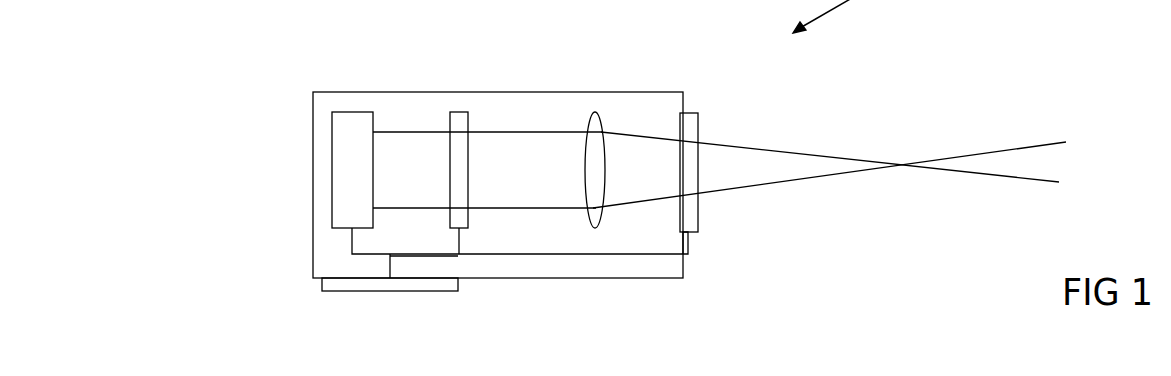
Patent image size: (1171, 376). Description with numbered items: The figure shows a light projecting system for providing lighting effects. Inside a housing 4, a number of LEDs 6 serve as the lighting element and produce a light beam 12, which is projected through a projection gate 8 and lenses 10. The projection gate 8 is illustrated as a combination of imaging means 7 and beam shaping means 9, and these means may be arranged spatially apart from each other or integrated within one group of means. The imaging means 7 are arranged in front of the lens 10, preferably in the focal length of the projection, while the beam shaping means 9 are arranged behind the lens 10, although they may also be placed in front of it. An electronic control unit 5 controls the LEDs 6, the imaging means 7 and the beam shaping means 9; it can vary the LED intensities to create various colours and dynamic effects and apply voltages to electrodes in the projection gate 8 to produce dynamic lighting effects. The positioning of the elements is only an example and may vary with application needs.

The housing 4 is at (313, 185).
The electronic control unit 5 is at (322, 282).
The LEDs 6 is at (352, 112).
The imaging means 7 is at (462, 111).
The projection gate 8 is at (683, 233).
The beam shaping means 9 is at (697, 102).
The lenses 10 is at (596, 111).
The light beam 12 is at (1038, 146).